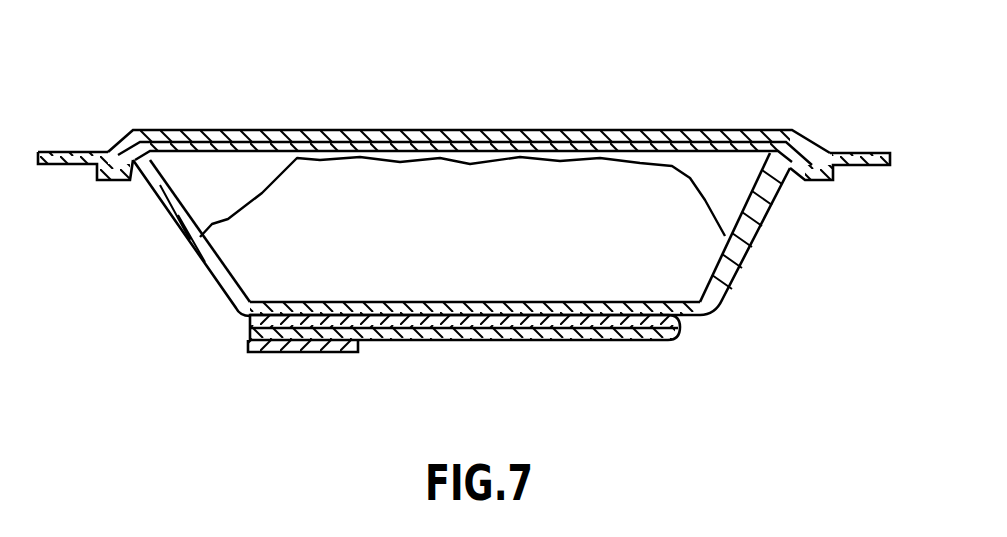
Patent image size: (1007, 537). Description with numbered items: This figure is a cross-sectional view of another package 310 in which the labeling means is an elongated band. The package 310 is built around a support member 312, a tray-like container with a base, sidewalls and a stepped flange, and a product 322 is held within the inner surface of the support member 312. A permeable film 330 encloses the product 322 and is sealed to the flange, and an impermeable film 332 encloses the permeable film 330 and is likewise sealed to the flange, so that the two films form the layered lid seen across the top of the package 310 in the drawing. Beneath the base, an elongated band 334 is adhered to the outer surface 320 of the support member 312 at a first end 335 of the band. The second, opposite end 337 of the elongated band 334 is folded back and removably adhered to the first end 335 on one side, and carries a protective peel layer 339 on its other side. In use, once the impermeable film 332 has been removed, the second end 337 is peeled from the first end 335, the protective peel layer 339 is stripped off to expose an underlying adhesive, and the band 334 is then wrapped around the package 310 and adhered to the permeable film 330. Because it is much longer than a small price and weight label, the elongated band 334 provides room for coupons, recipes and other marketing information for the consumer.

The package 310 is at (780, 105).
The support member 312 is at (193, 284).
The outer surface 320 is at (710, 310).
The product 322 is at (507, 225).
The permeable film 330 is at (255, 131).
The impermeable film 332 is at (412, 131).
The elongated band 334 is at (440, 350).
The first end 335 is at (249, 322).
The second end 337 is at (249, 334).
The protective peel layer 339 is at (320, 346).